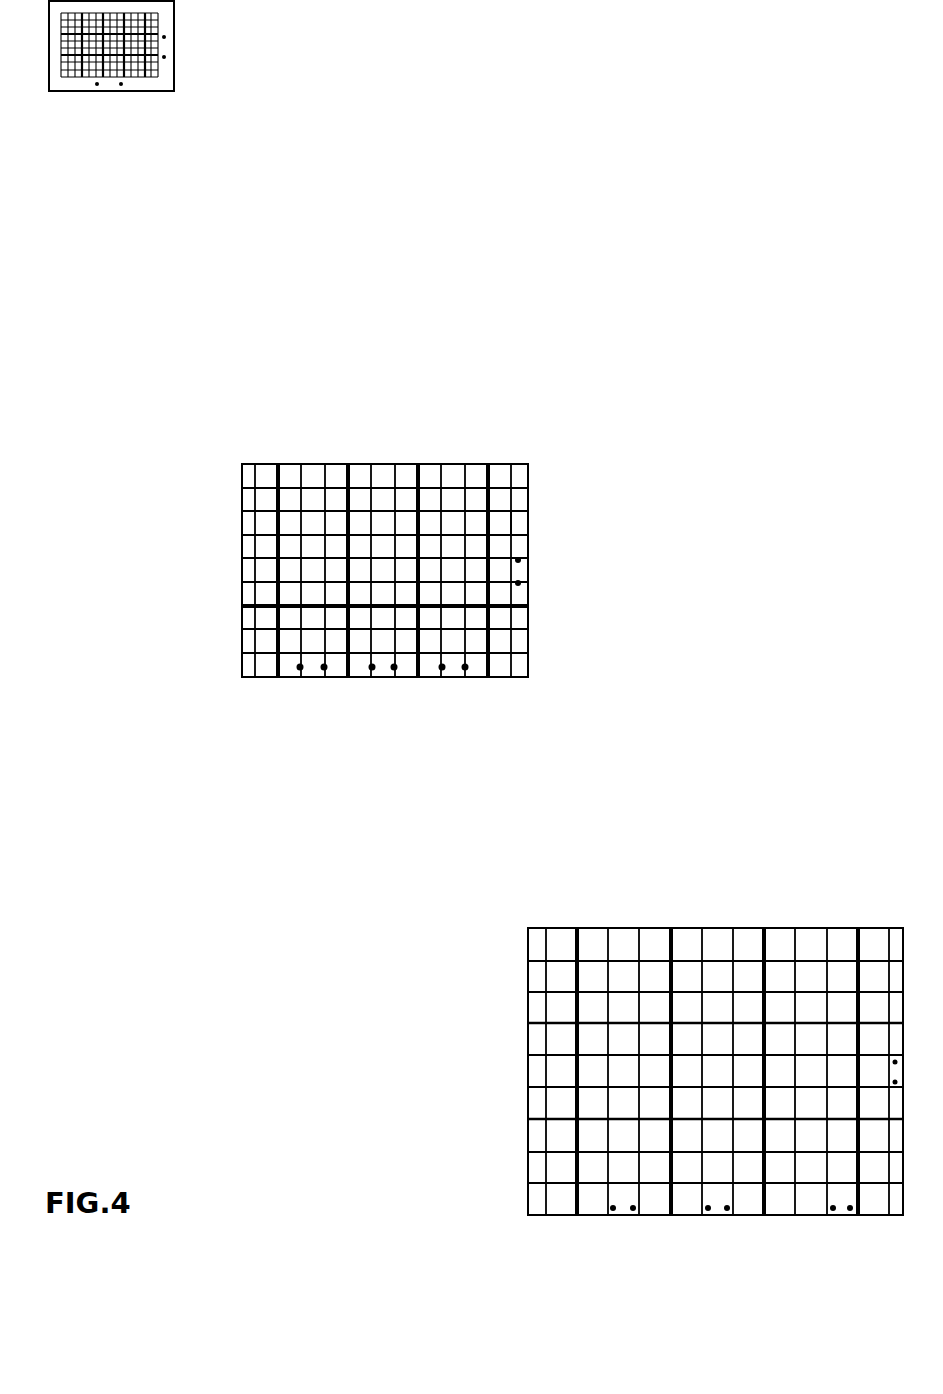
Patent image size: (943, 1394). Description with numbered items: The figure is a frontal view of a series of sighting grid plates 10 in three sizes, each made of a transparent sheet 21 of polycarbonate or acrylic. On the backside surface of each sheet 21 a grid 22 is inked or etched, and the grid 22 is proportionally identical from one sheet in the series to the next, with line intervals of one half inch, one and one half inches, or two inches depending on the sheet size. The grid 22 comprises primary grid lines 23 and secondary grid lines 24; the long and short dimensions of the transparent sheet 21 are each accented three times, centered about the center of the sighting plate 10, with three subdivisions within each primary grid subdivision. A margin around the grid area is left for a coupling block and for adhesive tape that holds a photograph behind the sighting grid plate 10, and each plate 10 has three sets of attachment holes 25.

The sighting grid plate 10 is at (179, 55).
The transparent sheet 21 is at (530, 498).
The grid 22 is at (450, 610).
The primary grid lines 23 is at (492, 549).
The secondary grid lines 24 is at (515, 521).
The attachment holes 25 is at (533, 584).